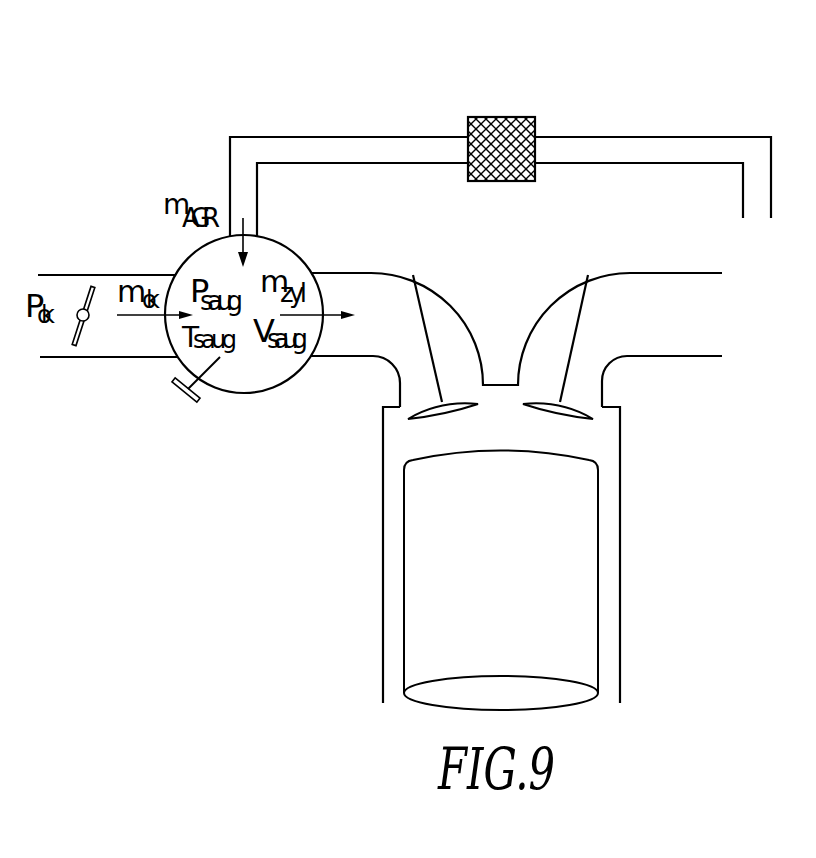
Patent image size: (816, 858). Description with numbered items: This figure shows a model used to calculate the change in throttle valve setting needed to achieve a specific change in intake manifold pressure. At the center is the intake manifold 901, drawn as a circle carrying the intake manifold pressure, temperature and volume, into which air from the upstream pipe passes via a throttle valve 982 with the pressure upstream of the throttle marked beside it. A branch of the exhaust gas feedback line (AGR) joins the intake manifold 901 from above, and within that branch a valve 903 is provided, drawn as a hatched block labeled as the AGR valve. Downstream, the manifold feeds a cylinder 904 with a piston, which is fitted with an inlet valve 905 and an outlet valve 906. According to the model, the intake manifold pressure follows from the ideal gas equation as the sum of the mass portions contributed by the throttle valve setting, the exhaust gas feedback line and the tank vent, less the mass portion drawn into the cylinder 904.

The intake manifold 901 is at (88, 273).
The throttle valve 982 is at (92, 323).
The valve 903 is at (510, 117).
The inlet valve 905 is at (423, 342).
The outlet valve 906 is at (578, 322).
The cylinder 904 is at (608, 537).